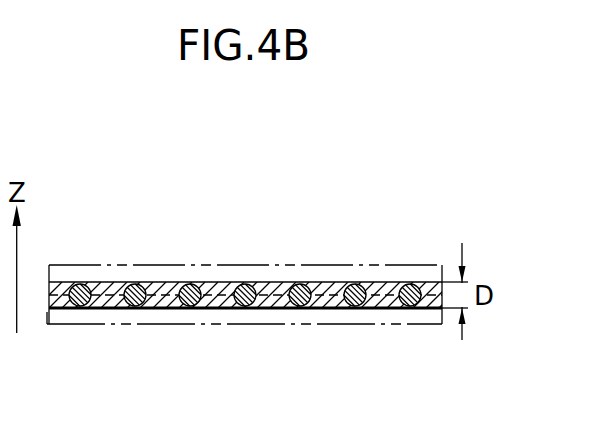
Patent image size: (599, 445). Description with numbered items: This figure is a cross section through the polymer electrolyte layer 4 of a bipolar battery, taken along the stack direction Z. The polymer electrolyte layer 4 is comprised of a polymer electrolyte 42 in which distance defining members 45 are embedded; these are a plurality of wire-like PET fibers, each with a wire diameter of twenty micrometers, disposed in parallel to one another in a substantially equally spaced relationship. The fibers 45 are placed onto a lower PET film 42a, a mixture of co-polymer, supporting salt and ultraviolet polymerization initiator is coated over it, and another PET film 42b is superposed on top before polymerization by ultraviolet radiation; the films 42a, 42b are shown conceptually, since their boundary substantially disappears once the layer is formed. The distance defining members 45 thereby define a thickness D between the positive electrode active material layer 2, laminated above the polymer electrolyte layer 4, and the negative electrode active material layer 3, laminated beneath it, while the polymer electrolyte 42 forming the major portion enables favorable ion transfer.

The positive electrode active material layer 2 is at (133, 266).
The negative electrode active material layer 3 is at (105, 326).
The polymer electrolyte layer 4 is at (199, 218).
The polymer electrolyte 42 is at (244, 299).
The PET film 42a is at (60, 312).
The PET film 42b is at (60, 268).
The distance defining members 45 is at (253, 268).